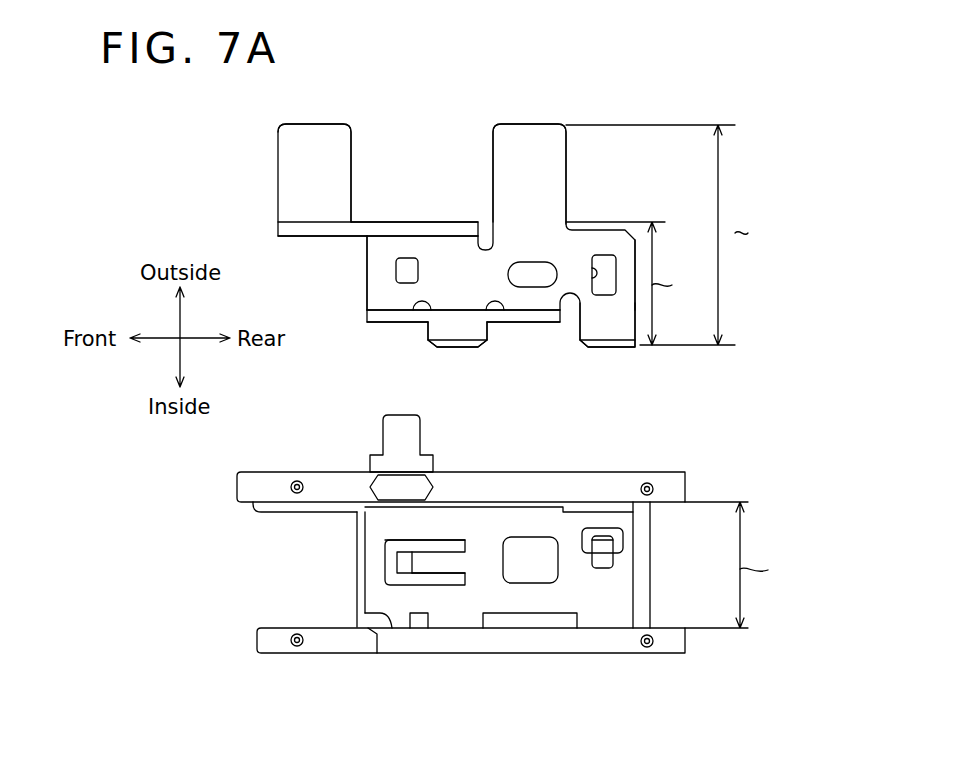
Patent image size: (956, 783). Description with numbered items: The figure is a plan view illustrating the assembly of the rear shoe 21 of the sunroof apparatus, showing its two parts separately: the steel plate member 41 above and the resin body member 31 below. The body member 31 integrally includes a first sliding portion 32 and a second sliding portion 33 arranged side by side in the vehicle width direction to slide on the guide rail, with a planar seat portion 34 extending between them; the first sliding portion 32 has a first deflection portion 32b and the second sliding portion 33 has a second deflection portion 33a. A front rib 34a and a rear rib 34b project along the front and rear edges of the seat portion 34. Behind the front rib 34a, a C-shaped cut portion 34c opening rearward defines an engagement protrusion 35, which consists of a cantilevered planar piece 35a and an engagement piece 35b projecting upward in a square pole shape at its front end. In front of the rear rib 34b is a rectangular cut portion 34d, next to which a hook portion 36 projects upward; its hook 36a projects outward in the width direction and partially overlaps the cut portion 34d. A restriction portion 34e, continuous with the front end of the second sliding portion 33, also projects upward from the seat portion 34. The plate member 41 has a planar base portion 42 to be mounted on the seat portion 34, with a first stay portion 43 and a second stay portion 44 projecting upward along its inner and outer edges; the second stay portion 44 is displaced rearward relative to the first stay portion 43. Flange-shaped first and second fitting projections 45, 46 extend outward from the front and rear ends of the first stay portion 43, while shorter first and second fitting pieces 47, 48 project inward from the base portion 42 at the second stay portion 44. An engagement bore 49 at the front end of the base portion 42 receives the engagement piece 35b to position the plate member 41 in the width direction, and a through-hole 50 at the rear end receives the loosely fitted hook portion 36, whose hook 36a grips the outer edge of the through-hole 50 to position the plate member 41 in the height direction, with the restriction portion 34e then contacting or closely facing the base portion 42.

The rear shoe 21 is at (826, 378).
The plate member 41 is at (764, 377).
The body member 31 is at (765, 435).
The base portion 42 is at (367, 252).
The first stay portion 43 is at (401, 222).
The second stay portion 44 is at (385, 322).
The first fitting projection 45 is at (278, 157).
The second fitting projection 46 is at (566, 168).
The first fitting piece 47 is at (460, 340).
The second fitting piece 48 is at (605, 340).
The engagement bore 49 is at (418, 268).
The through-hole 50 is at (592, 278).
The first sliding portion 32 is at (685, 489).
The first deflection portion 32b is at (523, 480).
The second sliding portion 33 is at (685, 652).
The second deflection portion 33a is at (533, 645).
The seat portion 34 is at (620, 598).
The front rib 34a is at (357, 534).
The rear rib 34b is at (650, 534).
The cut portion 34c is at (455, 540).
The cut portion 34d is at (588, 530).
The restriction portion 34e is at (383, 614).
The engagement protrusion 35 is at (487, 698).
The planar piece 35a is at (445, 567).
The engagement piece 35b is at (407, 562).
The hook portion 36 is at (605, 562).
The hook 36a is at (603, 536).